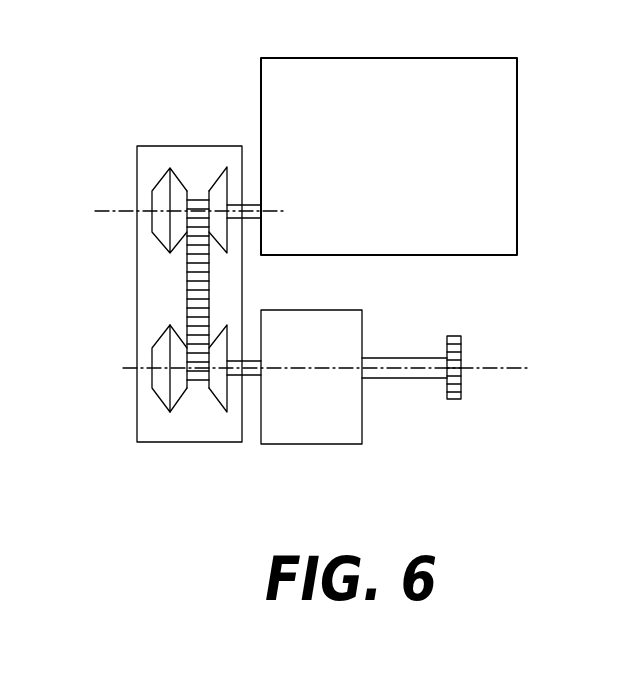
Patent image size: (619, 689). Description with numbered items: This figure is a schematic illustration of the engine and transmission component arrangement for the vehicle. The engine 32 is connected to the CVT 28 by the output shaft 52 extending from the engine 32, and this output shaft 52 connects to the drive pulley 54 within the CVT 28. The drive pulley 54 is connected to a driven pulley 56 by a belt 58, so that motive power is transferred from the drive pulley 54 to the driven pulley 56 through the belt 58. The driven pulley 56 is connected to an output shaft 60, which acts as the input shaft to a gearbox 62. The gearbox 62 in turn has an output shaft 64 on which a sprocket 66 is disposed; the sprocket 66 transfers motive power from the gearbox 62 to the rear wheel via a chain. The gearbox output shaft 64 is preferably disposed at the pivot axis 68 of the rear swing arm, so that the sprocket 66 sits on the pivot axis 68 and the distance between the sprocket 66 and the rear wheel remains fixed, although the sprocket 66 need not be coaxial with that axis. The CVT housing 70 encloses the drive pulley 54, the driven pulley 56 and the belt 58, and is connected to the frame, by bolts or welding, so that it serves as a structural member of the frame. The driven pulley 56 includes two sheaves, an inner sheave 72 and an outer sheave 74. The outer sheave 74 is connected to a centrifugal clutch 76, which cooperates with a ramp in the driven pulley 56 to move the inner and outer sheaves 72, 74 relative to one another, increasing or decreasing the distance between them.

The CVT 28 is at (90, 279).
The engine 32 is at (502, 155).
The output shaft 52 is at (248, 219).
The drive pulley 54 is at (180, 186).
The driven pulley 56 is at (138, 369).
The belt 58 is at (187, 311).
The output shaft 60 is at (250, 376).
The gearbox 62 is at (320, 430).
The output shaft 64 is at (400, 378).
The sprocket 66 is at (461, 392).
The pivot axis 68 is at (495, 368).
The CVT housing 70 is at (137, 402).
The inner sheave 72 is at (217, 398).
The outer sheave 74 is at (183, 403).
The centrifugal clutch 76 is at (150, 395).